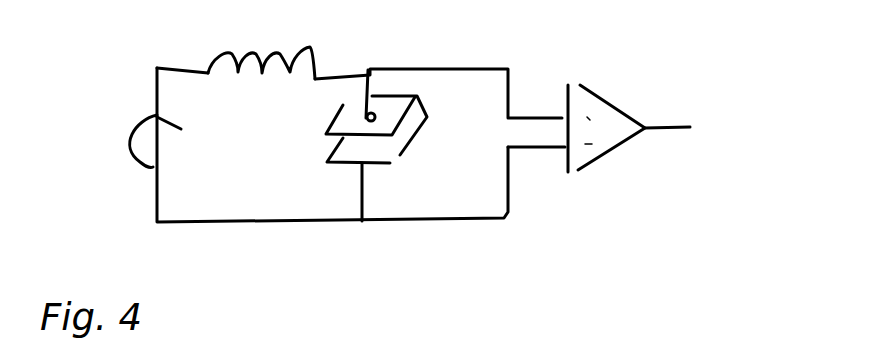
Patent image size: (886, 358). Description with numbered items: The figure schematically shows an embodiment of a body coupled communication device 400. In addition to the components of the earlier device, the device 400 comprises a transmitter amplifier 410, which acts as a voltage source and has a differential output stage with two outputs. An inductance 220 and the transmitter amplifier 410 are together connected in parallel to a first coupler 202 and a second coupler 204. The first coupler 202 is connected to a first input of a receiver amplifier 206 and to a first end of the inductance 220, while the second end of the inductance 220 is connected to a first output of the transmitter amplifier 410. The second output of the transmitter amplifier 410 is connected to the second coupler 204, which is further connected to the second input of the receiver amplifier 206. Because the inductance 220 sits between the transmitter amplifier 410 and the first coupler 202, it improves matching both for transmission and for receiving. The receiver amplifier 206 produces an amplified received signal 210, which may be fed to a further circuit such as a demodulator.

The body coupled communication device 400 is at (800, 78).
The inductance 220 is at (268, 49).
The first coupler 202 is at (326, 122).
The second coupler 204 is at (328, 172).
The transmitter amplifier 410 is at (131, 141).
The receiver amplifier 206 is at (606, 125).
The amplified received signal 210 is at (663, 129).